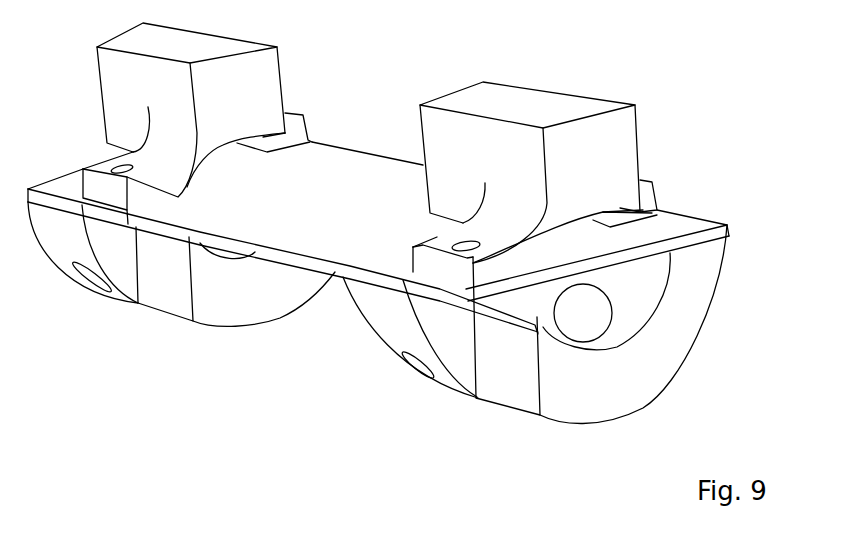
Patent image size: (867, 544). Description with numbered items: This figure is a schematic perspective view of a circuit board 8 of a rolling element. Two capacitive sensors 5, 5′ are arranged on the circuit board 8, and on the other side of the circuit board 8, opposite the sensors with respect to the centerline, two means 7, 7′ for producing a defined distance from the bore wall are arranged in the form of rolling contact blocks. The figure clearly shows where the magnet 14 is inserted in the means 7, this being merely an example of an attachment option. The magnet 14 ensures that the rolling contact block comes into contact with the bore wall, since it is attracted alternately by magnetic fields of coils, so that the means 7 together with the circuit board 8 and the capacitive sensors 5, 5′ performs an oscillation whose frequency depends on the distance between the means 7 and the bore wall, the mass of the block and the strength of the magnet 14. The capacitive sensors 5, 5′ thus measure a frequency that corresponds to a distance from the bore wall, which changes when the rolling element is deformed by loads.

The capacitive sensor 5 is at (258, 82).
The capacitive sensor 5′ is at (597, 147).
The means for producing a defined distance 7 is at (242, 308).
The means for producing a defined distance 7′ is at (687, 310).
The circuit board 8 is at (677, 230).
The magnet 14 is at (585, 316).